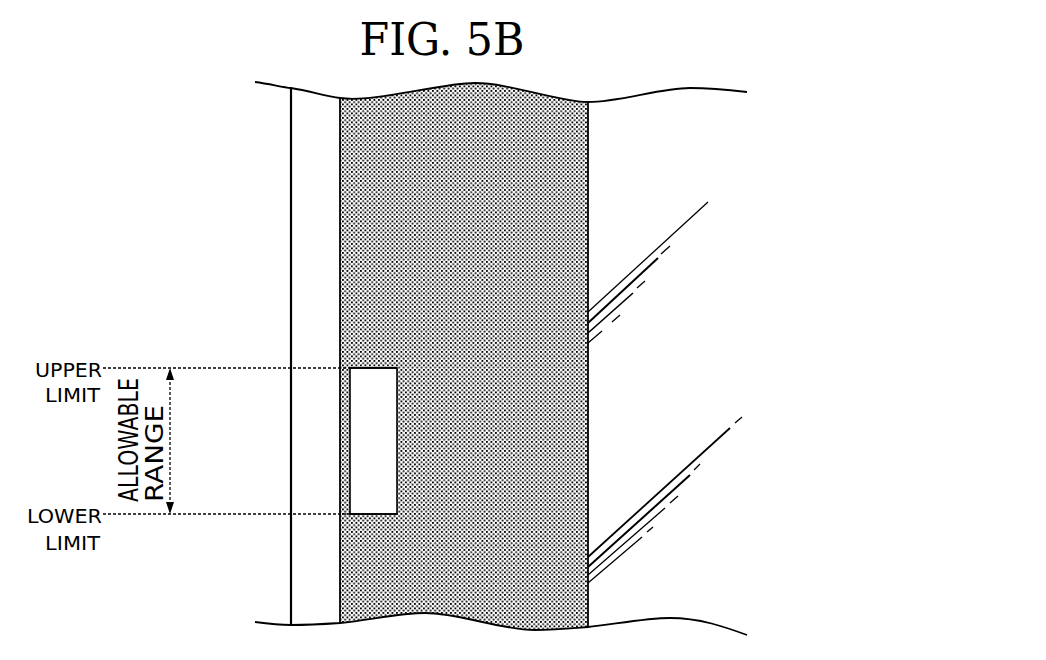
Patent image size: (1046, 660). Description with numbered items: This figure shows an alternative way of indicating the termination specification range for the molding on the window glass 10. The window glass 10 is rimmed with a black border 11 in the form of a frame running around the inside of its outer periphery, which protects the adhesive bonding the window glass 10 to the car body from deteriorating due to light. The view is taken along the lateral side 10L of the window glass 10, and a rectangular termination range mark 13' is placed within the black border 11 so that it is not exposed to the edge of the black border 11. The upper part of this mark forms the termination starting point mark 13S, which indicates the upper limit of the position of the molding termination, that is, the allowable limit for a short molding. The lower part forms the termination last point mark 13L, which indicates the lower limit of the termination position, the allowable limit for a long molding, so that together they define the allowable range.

The window glass 10 is at (258, 111).
The lateral side 10L is at (291, 169).
The black border 11 is at (355, 230).
The rectangular termination range mark 13' is at (290, 441).
The termination starting point mark 13S is at (373, 369).
The termination last point mark 13L is at (373, 513).